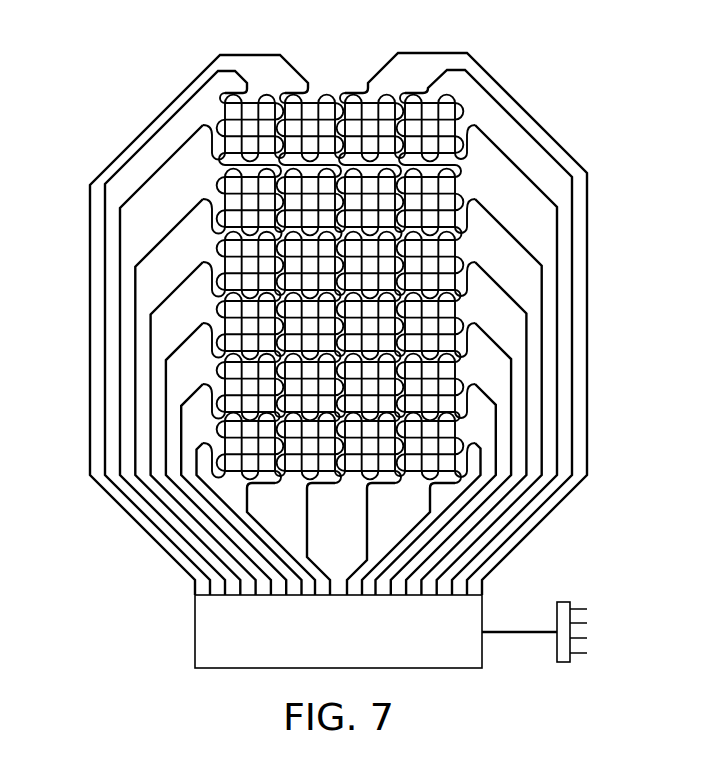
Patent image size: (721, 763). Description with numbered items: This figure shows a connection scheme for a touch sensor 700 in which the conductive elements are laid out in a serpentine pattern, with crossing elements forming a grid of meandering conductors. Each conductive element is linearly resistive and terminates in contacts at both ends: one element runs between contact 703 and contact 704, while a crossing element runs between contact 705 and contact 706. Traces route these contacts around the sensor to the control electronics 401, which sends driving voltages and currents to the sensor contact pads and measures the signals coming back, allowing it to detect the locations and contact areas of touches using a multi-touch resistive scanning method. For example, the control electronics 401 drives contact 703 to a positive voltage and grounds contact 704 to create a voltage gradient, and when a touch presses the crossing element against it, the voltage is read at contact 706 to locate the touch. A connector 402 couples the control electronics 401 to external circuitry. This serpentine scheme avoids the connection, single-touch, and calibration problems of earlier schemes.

The tactile sensor system 700 is at (105, 62).
The contact 703 is at (368, 83).
The contact 704 is at (368, 485).
The contact 705 is at (212, 267).
The contact 706 is at (473, 266).
The control electronics 401 is at (483, 670).
The connector 402 is at (570, 602).